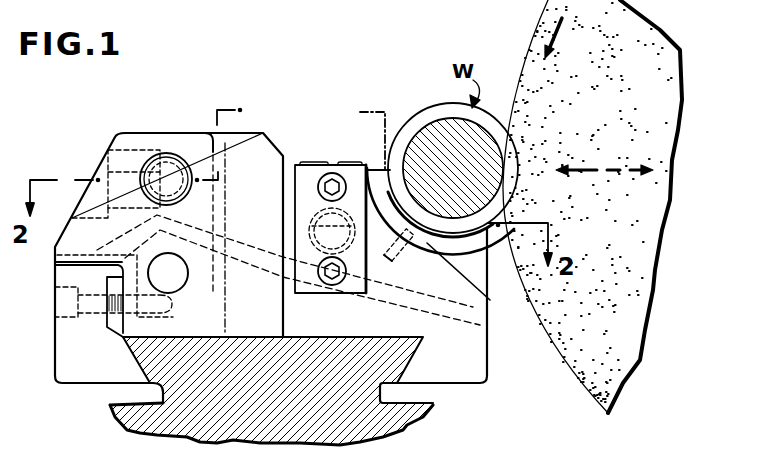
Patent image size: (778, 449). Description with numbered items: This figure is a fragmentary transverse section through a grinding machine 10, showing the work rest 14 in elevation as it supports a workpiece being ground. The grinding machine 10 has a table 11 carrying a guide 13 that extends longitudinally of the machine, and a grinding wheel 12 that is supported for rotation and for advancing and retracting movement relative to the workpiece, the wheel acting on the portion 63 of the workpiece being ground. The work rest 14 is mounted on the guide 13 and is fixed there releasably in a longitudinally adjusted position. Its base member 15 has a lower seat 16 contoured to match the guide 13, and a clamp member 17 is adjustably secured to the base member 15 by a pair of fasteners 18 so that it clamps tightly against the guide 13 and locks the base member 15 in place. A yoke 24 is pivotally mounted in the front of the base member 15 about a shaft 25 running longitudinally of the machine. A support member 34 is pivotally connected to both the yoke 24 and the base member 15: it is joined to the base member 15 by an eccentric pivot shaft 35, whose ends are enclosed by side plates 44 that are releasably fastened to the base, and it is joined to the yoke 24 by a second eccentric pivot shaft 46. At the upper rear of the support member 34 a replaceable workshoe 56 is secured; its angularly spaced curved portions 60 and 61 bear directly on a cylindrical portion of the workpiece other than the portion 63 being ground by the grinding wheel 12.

The grinding machine 10 is at (402, 62).
The table 11 is at (406, 426).
The grinding wheel 12 is at (634, 297).
The guide 13 is at (370, 352).
The work rest 14 is at (180, 118).
The base member 15 is at (488, 367).
The seat 16 is at (323, 343).
The clamp member 17 is at (67, 355).
The fasteners 18 is at (53, 308).
The yoke 24 is at (127, 128).
The shaft 25 is at (170, 253).
The support member 34 is at (490, 301).
The pivot pin or shaft 35 is at (316, 233).
The plates 44 is at (309, 284).
The pivot pin or shaft 46 is at (172, 160).
The workshoe 56 is at (476, 238).
The curved portion 60 is at (387, 180).
The curved portion 61 is at (432, 246).
The portion being ground 63 is at (436, 132).